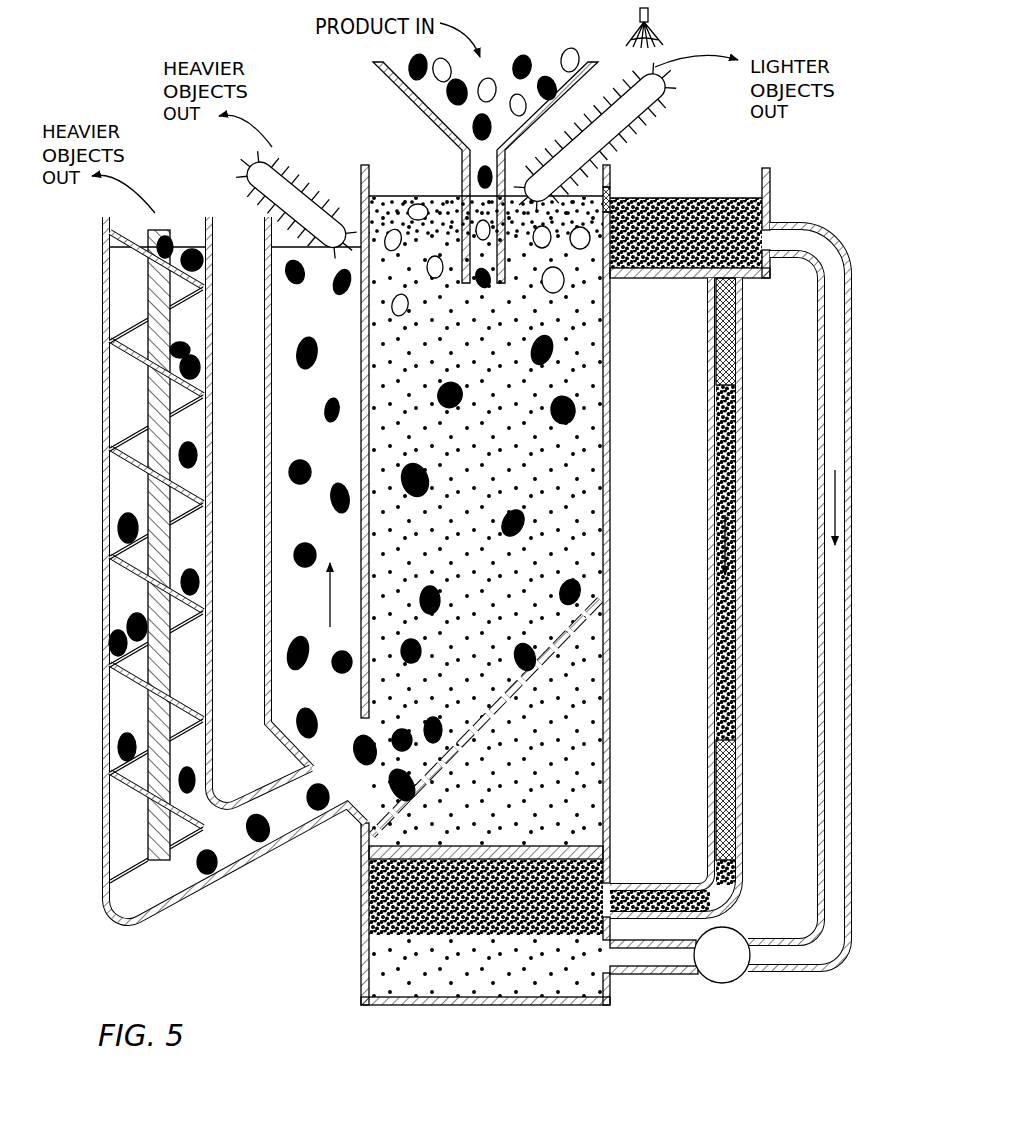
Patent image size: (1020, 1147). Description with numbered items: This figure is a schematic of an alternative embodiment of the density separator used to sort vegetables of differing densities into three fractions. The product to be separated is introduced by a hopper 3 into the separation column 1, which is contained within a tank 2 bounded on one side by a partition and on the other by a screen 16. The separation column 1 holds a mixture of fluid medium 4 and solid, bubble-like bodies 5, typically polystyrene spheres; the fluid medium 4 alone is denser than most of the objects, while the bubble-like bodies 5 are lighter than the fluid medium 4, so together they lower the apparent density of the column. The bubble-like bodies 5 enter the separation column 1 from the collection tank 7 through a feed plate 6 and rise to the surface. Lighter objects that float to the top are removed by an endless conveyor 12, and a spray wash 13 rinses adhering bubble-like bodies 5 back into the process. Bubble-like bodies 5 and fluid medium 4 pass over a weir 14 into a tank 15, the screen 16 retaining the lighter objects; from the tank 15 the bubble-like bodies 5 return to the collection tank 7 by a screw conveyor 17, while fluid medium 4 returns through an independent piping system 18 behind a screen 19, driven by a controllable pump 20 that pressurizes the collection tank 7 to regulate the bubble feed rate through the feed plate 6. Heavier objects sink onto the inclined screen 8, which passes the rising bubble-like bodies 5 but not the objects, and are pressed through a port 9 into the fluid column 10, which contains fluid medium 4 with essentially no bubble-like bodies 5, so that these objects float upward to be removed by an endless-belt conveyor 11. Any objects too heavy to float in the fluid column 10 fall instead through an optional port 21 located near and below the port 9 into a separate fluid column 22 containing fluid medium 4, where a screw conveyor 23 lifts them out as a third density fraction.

The separation column 1 is at (597, 468).
The tank 2 is at (366, 165).
The hopper 3 is at (386, 77).
The fluid medium 4 is at (833, 392).
The solid, bubble-like bodies 5 is at (685, 198).
The feed plate 6 is at (367, 869).
The collection tank 7 is at (362, 952).
The screen 8 is at (584, 634).
The port 9 is at (360, 738).
The fluid column 10 is at (266, 656).
The endless-belt conveyor 11 is at (276, 170).
The endless conveyor 12 is at (651, 113).
The spray wash 13 is at (650, 17).
The weir 14 is at (633, 279).
The tank 15 is at (770, 195).
The screen 16 is at (609, 192).
The screw conveyor 17 is at (744, 337).
The piping system 18 is at (853, 337).
The screen 19 is at (772, 238).
The controllable pump 20 is at (736, 977).
The optional port 21 is at (318, 778).
The separate fluid column 22 is at (233, 878).
The screw conveyor 23 is at (190, 545).